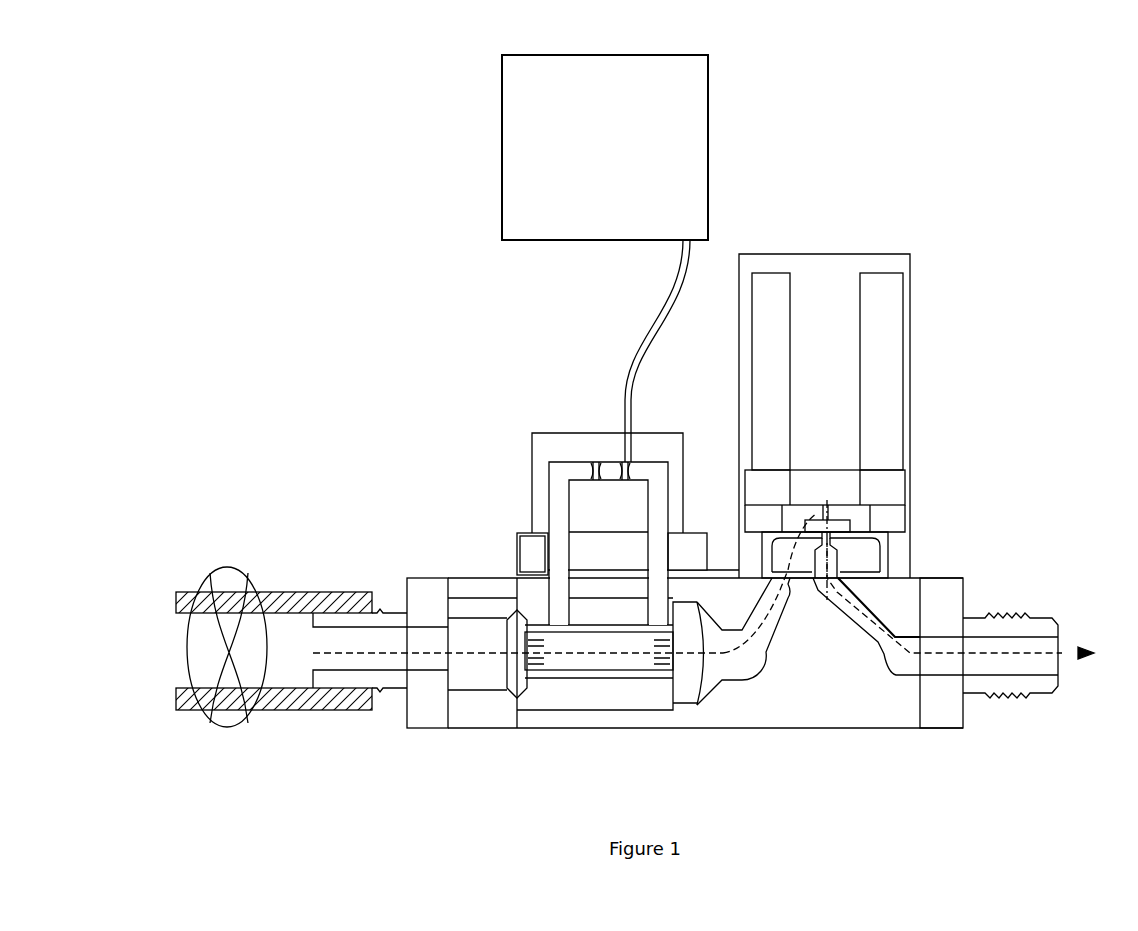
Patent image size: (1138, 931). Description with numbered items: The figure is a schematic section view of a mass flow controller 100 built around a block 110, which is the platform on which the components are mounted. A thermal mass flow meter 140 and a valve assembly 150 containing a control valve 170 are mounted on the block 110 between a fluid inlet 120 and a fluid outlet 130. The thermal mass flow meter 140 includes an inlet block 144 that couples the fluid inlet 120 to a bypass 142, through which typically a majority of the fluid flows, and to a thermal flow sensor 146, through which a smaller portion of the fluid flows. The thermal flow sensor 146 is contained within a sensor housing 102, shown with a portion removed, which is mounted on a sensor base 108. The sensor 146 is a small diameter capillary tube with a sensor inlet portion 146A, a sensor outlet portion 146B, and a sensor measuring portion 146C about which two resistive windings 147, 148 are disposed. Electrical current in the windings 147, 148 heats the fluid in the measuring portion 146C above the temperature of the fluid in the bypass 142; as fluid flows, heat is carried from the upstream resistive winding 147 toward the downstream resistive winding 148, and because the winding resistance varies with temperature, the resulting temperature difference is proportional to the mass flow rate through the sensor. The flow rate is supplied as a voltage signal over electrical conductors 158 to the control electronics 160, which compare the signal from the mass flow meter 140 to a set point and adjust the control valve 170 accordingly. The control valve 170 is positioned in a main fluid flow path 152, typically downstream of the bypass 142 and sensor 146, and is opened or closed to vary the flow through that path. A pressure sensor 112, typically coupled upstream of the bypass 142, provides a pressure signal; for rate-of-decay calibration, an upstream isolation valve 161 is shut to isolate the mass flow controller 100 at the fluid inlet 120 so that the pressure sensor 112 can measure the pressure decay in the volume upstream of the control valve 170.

The mass flow controller 100 is at (402, 155).
The sensor housing 102 is at (530, 447).
The sensor base 108 is at (512, 571).
The block 110 is at (872, 700).
The pressure sensor 112 is at (515, 548).
The fluid inlet 120 is at (407, 605).
The fluid outlet 130 is at (1047, 650).
The thermal mass flow meter 140 is at (532, 433).
The bypass 142 is at (587, 680).
The inlet block 144 is at (468, 713).
The thermal flow sensor 146 is at (648, 462).
The sensor inlet portion 146A is at (547, 505).
The sensor outlet portion 146B is at (670, 500).
The sensor measuring portion 146C is at (603, 462).
The upstream resistive winding 147 is at (595, 462).
The downstream resistive winding 148 is at (620, 462).
The valve assembly 150 is at (835, 273).
The main fluid flow path 152 is at (758, 620).
The electrical conductors 158 is at (683, 313).
The control electronics 160 is at (590, 155).
The upstream isolation valve 161 is at (222, 568).
The control valve 170 is at (850, 522).